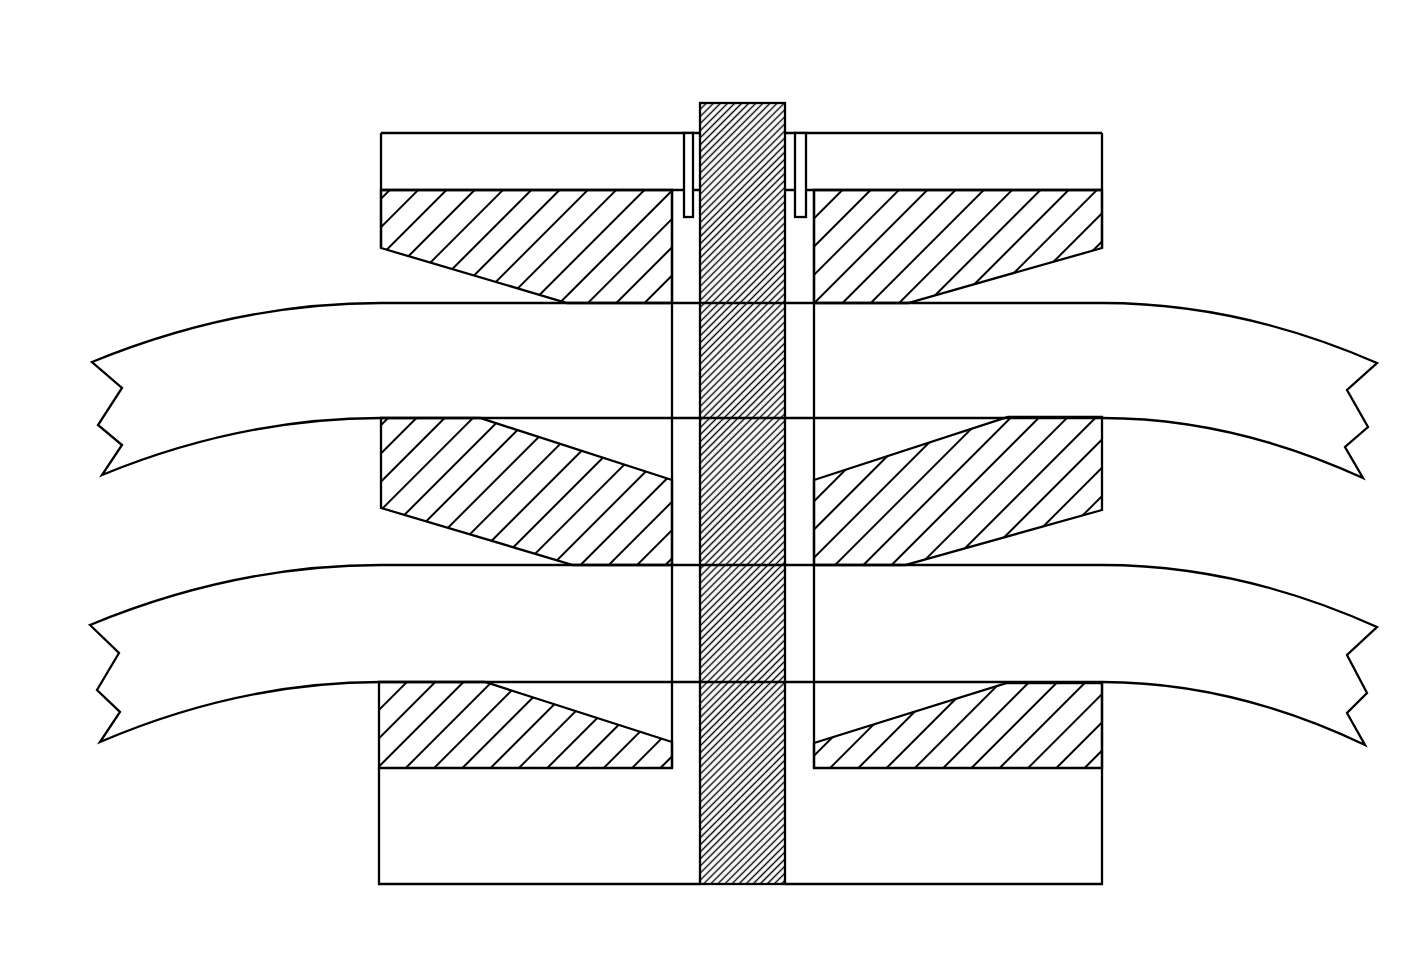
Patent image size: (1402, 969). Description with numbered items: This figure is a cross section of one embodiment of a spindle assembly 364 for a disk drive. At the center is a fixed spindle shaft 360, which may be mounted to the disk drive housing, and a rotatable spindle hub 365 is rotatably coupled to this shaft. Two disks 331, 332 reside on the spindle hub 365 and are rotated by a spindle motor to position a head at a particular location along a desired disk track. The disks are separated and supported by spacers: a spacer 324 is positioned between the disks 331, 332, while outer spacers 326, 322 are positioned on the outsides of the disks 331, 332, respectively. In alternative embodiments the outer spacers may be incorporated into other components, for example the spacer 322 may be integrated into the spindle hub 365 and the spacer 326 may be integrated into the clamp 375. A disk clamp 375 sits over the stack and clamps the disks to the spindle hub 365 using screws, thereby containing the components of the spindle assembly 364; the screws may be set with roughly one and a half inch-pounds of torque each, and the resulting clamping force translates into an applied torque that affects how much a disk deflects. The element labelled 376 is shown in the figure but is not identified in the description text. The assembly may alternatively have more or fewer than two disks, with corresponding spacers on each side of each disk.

The spindle assembly 364 is at (1147, 99).
The liner spacers 376 is at (689, 137).
The disk clamp 375 is at (1018, 175).
The spacer 326 is at (1057, 240).
The disk 331 is at (1272, 393).
The spacer 324 is at (1060, 482).
The disk 332 is at (1272, 655).
The spacer 322 is at (1058, 740).
The spindle shaft 360 is at (760, 813).
The spindle hub 365 is at (1025, 853).